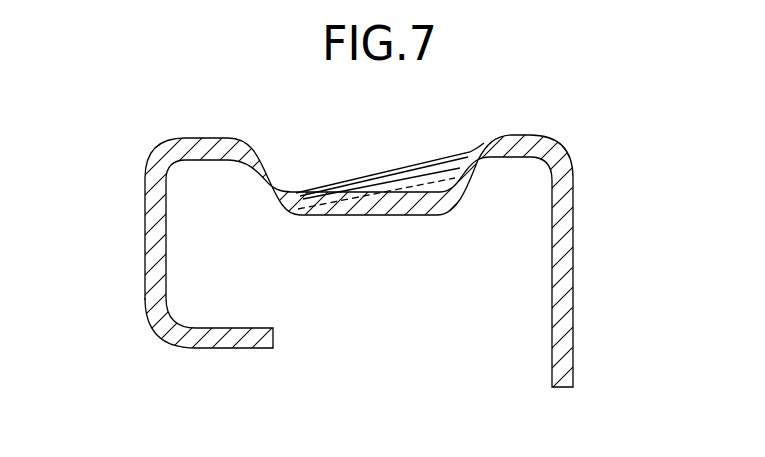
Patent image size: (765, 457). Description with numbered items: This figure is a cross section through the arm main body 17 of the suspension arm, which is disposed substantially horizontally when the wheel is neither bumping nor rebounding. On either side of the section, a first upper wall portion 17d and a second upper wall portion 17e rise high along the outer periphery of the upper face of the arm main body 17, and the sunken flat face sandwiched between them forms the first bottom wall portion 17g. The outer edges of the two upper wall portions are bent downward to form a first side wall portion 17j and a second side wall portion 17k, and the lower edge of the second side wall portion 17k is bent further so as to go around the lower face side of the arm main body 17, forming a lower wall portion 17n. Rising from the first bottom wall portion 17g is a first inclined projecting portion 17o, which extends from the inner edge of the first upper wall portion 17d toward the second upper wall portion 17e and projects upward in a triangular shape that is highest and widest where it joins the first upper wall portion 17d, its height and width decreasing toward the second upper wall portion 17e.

The arm main body 17 is at (382, 242).
The first upper wall portion 17d is at (520, 135).
The second upper wall portion 17e is at (205, 140).
The first bottom wall portion 17g is at (343, 195).
The first side wall portion 17j is at (562, 285).
The second side wall portion 17k is at (152, 256).
The lower wall portion 17n is at (236, 338).
The first inclined projecting portion 17o is at (405, 163).